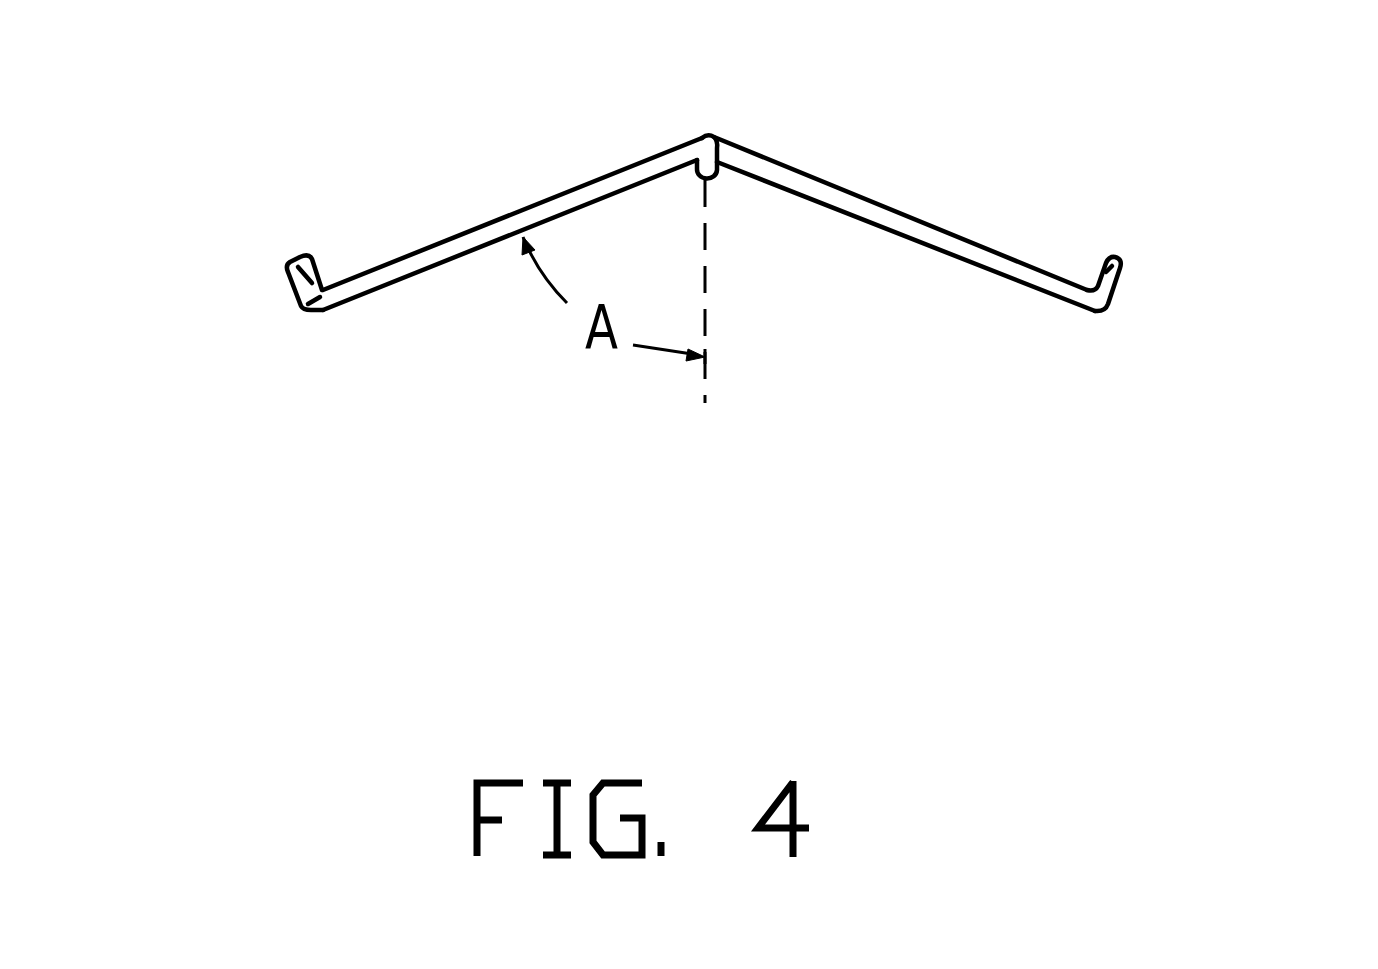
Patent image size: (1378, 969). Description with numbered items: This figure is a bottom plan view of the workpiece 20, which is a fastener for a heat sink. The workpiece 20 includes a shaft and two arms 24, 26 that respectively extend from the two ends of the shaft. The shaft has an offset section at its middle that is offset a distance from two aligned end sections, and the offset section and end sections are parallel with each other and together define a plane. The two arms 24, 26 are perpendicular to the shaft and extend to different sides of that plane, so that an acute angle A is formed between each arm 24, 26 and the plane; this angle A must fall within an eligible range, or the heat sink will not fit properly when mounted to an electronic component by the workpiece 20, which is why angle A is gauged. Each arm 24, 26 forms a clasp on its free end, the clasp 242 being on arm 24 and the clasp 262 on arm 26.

The workpiece 20 is at (716, 173).
The arm 24 is at (587, 195).
The arm 26 is at (905, 223).
The clasp 242 is at (298, 262).
The second end hook 262 is at (1113, 275).